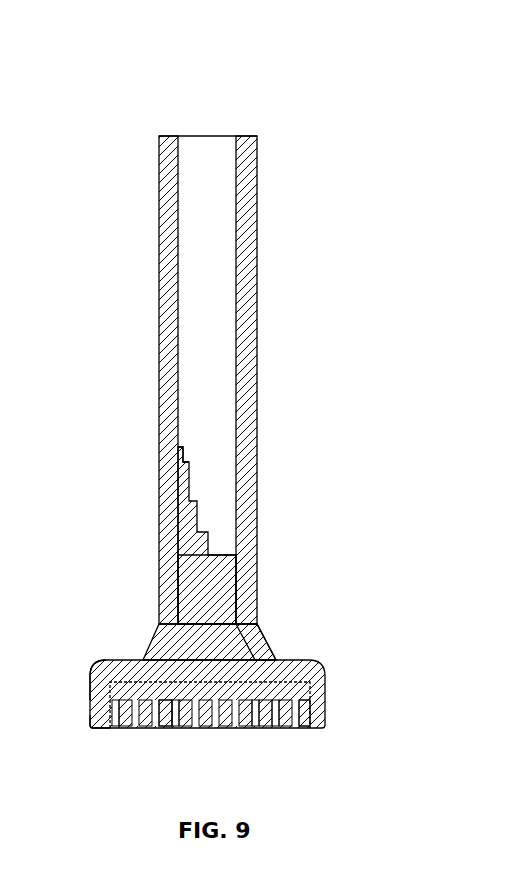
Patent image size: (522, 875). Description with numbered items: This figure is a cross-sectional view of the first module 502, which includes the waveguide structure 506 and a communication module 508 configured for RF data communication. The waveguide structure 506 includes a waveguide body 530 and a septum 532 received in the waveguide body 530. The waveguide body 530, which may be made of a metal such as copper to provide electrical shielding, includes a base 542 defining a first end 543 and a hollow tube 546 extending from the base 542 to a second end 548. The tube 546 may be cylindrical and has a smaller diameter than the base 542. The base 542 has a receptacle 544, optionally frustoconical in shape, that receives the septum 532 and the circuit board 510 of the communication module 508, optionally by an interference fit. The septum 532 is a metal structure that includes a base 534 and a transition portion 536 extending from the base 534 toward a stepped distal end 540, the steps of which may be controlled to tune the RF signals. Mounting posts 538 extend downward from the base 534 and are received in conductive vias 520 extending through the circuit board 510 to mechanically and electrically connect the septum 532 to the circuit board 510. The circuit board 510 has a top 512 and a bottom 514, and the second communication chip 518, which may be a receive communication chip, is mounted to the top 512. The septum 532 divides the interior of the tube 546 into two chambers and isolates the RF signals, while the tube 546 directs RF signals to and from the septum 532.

The first module 502 is at (143, 104).
The waveguide structure 506 is at (276, 210).
The second end 548 is at (247, 137).
The waveguide body 530 is at (245, 382).
The tube 546 is at (168, 525).
The distal end 540 is at (187, 447).
The septum 532 is at (225, 580).
The receptacle 544 is at (166, 648).
The transition portion 536 is at (244, 645).
The top 512 is at (285, 690).
The base 542 is at (92, 698).
The first end 543 is at (100, 728).
The base 534 is at (303, 690).
The second communication chip 518 is at (130, 693).
The communication module 508 is at (155, 735).
The conductive vias 520 is at (185, 730).
The circuit board 510 is at (266, 728).
The bottom 514 is at (284, 724).
The mounting posts 538 is at (298, 710).